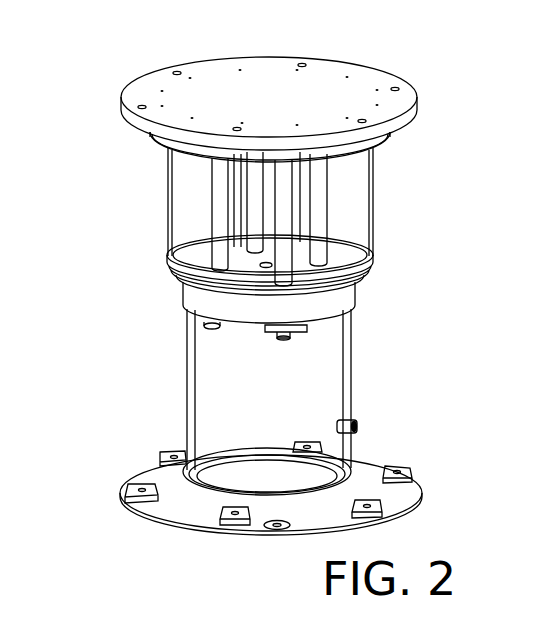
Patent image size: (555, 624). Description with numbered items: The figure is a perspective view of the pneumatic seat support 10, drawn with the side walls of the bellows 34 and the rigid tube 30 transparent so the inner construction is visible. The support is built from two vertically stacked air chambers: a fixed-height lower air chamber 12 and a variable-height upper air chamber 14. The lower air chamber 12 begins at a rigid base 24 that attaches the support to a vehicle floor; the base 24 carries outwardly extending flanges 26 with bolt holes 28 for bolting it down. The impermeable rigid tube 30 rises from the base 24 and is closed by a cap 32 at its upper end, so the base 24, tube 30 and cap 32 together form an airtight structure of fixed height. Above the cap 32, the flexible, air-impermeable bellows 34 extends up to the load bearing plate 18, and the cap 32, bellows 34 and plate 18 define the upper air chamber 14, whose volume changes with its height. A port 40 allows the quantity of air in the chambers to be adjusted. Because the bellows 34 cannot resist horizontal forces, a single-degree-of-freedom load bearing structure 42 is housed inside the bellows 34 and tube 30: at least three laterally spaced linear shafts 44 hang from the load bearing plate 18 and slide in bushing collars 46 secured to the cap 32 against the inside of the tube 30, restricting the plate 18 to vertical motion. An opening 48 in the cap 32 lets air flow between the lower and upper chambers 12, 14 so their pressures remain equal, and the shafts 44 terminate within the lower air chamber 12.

The pneumatic seat support 10 is at (381, 56).
The lower air chamber 12 is at (117, 389).
The upper air chamber 14 is at (81, 169).
The load bearing plate 18 is at (358, 96).
The rigid base 24 is at (173, 503).
The flanges 26 is at (147, 473).
The bolt holes 28 is at (368, 503).
The rigid tube 30 is at (348, 363).
The cap 32 is at (358, 283).
The bellows 34 is at (372, 190).
The port 40 is at (358, 428).
The load bearing structure 42 is at (346, 218).
The linear shafts 44 is at (252, 213).
The bushing collars 46 is at (282, 339).
The opening 48 is at (264, 265).